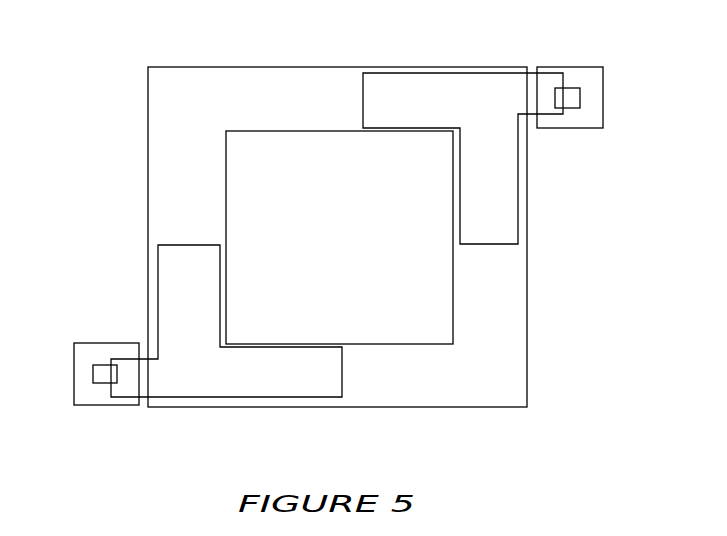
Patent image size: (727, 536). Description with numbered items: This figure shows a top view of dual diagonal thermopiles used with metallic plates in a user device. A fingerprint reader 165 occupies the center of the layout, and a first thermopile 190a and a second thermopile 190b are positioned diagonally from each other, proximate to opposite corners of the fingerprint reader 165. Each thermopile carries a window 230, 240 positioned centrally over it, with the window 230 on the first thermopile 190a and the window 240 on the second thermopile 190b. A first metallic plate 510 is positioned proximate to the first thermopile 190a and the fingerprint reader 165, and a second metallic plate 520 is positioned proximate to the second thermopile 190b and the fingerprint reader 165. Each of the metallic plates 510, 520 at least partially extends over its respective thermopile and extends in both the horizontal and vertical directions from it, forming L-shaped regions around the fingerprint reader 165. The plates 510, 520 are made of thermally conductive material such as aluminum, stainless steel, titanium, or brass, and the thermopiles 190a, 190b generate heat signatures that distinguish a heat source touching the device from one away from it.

The fingerprint reader 165 is at (453, 288).
The first metallic plate 510 is at (190, 244).
The second metallic plate 520 is at (518, 179).
The first thermopile 190a is at (107, 342).
The second thermopile 190b is at (570, 67).
The window 230 is at (93, 374).
The window 240 is at (580, 97).